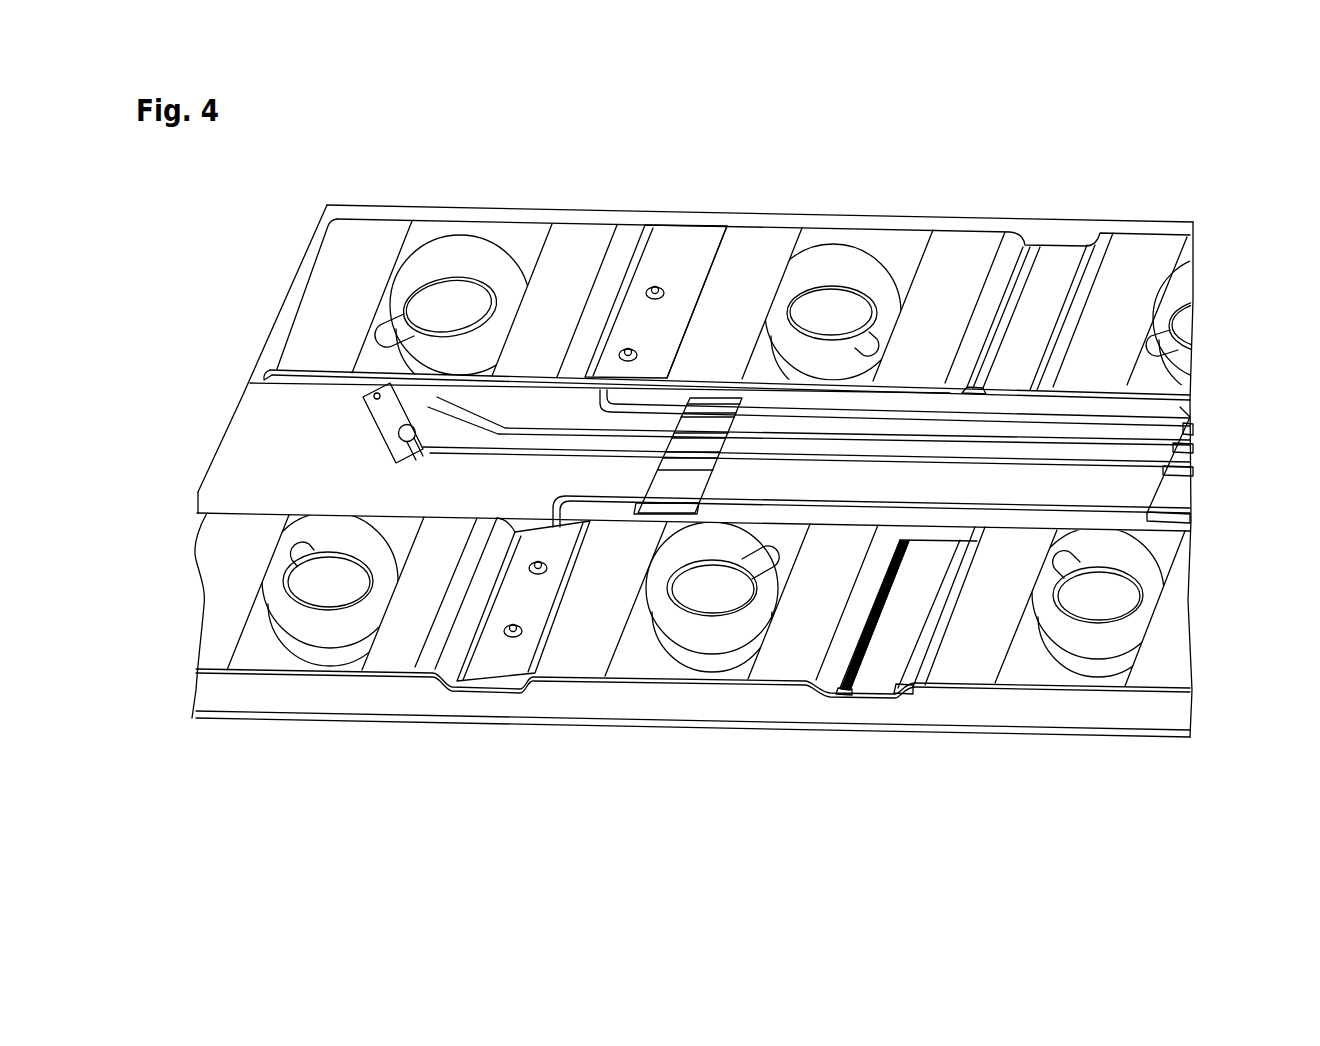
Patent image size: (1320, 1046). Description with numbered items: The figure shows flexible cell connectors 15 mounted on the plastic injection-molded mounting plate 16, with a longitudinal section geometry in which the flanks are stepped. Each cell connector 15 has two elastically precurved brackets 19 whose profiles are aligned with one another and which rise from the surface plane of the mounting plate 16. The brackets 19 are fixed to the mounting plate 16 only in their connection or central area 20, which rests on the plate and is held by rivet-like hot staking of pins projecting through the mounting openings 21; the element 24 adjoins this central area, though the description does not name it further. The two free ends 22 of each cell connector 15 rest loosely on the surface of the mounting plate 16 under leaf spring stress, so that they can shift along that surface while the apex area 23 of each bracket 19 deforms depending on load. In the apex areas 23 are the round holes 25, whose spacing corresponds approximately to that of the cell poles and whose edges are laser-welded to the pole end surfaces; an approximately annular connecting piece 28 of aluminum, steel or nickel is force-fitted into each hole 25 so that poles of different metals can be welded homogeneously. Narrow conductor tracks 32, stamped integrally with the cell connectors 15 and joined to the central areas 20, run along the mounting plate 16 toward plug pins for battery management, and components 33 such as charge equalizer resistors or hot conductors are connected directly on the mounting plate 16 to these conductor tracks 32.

The cell connector 15 is at (785, 684).
The mounting plate 16 is at (1014, 712).
The bracket 19 is at (922, 243).
The connection or central area 20 is at (498, 658).
The mounting opening 21 is at (630, 346).
The free end 22 is at (1040, 246).
The apex area 23 is at (693, 663).
The web 24 is at (729, 232).
The hole 25 is at (483, 240).
The connecting piece 28 is at (857, 270).
The conductor track 32 is at (1198, 432).
The component 33 is at (392, 412).